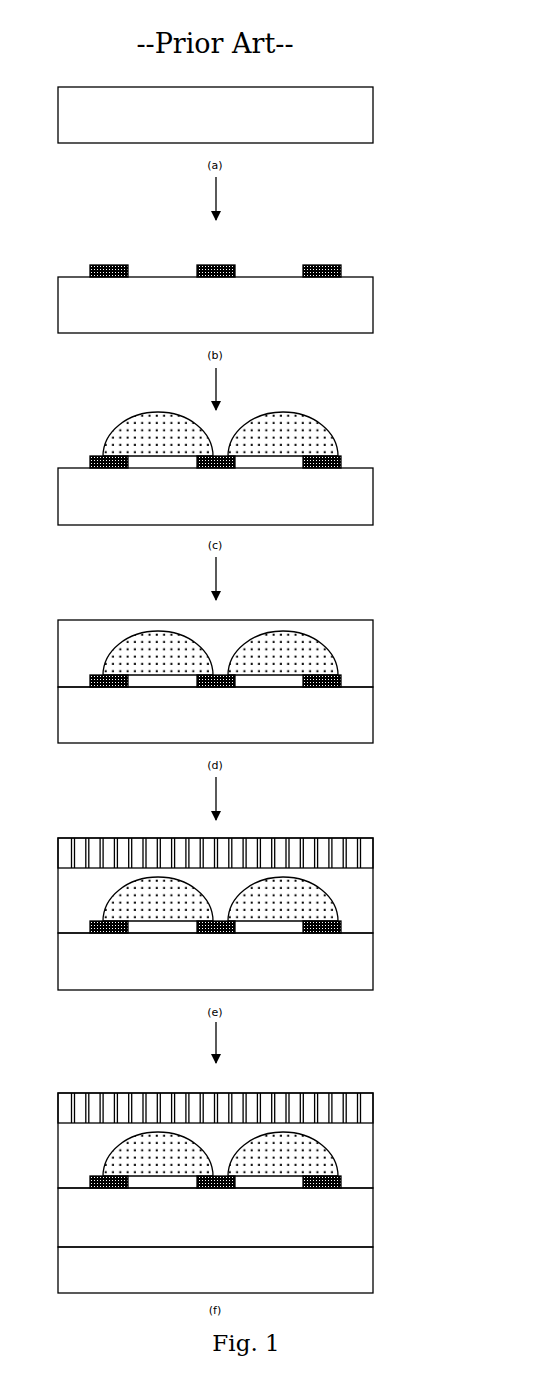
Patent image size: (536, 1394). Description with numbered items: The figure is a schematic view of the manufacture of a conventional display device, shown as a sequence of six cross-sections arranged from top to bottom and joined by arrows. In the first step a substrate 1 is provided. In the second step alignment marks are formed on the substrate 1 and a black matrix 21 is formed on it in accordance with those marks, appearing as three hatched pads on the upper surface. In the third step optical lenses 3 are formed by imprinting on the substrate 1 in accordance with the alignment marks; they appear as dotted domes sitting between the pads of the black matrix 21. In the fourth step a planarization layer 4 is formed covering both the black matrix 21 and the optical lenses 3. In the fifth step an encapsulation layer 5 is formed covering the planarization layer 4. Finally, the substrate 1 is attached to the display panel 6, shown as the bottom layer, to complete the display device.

The substrate 1 is at (373, 108).
The black matrix 21 is at (340, 266).
The optical lenses 3 is at (306, 420).
The planarization layer 4 is at (353, 620).
The encapsulation layer 5 is at (353, 838).
The display panel 6 is at (373, 1270).